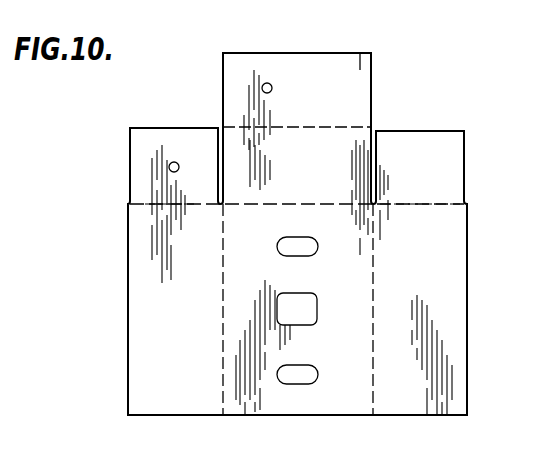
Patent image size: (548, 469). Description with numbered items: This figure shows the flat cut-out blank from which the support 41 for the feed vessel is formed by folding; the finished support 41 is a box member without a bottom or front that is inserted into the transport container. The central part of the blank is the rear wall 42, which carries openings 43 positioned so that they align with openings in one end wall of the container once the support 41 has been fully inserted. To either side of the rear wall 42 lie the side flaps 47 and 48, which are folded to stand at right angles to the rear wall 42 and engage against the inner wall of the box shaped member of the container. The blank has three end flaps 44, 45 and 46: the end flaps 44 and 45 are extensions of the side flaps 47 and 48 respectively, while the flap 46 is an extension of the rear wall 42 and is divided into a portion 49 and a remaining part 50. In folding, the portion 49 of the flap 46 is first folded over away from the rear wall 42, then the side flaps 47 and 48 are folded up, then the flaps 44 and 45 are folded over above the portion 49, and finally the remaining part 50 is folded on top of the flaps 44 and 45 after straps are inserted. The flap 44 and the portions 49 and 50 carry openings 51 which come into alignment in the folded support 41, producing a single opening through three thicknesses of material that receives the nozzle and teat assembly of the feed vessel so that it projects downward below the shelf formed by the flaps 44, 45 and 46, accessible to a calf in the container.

The support 41 is at (120, 319).
The rear wall 42 is at (334, 402).
The openings 43 is at (317, 307).
The end flap 44 is at (142, 184).
The end flap 45 is at (444, 140).
The end flap 46 is at (232, 52).
The side flap 47 is at (183, 403).
The side flap 48 is at (394, 403).
The portion of flap 46 49 is at (293, 190).
The remaining part of flap 46 50 is at (348, 65).
The openings 51 is at (272, 81).